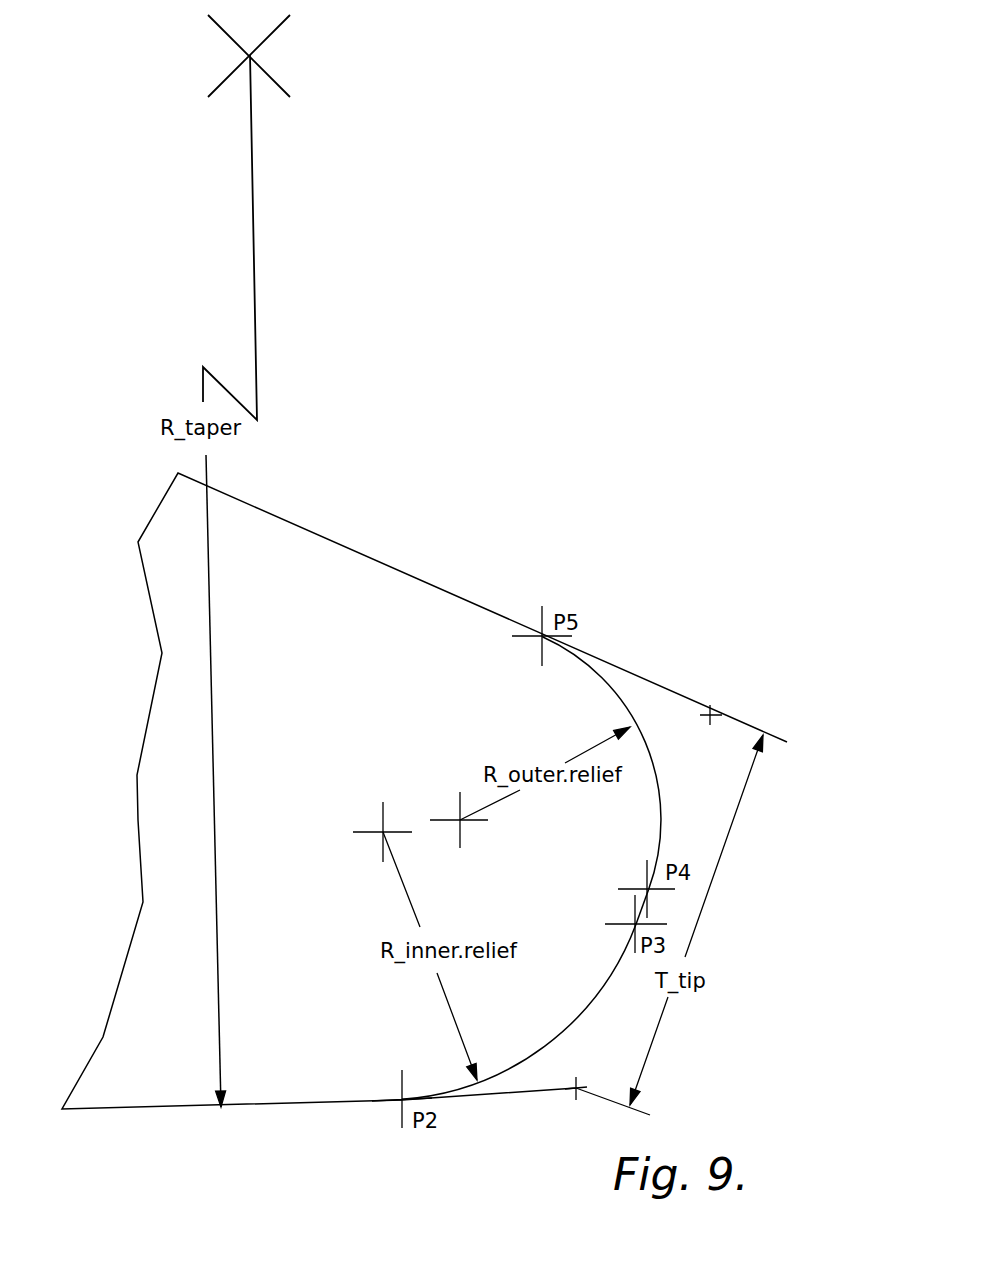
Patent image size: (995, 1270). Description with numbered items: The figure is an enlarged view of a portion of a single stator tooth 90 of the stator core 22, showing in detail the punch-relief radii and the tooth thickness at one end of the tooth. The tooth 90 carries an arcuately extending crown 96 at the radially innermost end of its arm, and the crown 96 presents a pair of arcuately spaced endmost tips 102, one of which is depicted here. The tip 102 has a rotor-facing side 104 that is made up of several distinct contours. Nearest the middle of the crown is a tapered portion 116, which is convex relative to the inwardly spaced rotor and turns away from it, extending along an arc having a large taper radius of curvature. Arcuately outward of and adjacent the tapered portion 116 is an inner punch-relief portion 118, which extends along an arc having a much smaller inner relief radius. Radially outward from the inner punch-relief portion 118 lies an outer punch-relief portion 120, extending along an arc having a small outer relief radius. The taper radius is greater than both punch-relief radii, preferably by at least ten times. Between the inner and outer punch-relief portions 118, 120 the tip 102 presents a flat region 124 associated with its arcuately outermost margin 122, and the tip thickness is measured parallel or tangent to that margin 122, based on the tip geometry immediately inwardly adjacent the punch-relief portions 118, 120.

The stator core 22 is at (273, 568).
The tooth 90 is at (318, 615).
The crown 96 is at (377, 627).
The endmost tip 102 is at (443, 665).
The rotor-facing side 104 is at (257, 1108).
The tapered portion 116 is at (323, 1107).
The inner punch-relief portion 118 is at (577, 1020).
The outer punch-relief portion 120 is at (643, 742).
The arcuately outermost margin 122 is at (733, 913).
The flat region 124 is at (640, 912).